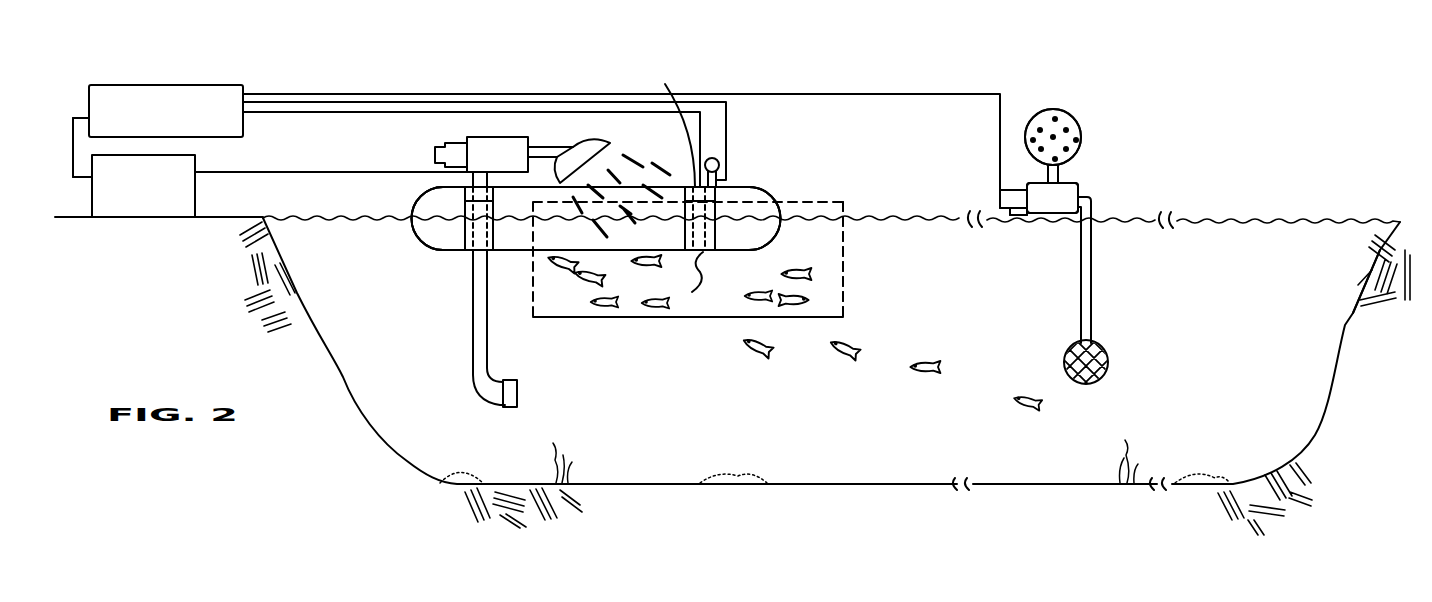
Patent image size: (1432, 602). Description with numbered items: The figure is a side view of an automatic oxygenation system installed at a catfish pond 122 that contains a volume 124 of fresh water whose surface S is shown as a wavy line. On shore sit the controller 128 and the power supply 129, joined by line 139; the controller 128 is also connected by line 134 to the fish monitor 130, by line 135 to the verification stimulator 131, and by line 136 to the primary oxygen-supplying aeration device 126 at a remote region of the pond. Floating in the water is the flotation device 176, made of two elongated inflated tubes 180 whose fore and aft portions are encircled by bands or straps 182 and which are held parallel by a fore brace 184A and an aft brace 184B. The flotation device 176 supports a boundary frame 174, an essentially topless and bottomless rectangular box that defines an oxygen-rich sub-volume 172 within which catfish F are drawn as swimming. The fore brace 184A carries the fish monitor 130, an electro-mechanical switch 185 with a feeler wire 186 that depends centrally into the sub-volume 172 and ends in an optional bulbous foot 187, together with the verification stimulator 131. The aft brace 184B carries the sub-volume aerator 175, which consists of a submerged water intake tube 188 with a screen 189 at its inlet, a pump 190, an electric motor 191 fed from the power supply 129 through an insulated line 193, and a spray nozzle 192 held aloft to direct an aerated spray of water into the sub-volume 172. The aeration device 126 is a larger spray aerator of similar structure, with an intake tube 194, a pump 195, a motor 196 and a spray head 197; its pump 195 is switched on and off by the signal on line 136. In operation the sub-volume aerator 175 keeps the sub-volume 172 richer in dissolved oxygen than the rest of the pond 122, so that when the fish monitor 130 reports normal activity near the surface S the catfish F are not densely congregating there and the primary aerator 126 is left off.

The catfish pond 122 is at (1352, 321).
The volume of fresh water 124 is at (930, 417).
The primary oxygen-supplying aeration device 126 is at (1107, 133).
The controller 128 is at (110, 87).
The power supply 129 is at (100, 202).
The fish monitor 130 is at (772, 170).
The verification stimulator 131 is at (718, 161).
The line 134 is at (699, 186).
The line 135 is at (727, 122).
The line 136 is at (863, 94).
The line 139 is at (72, 147).
The sub-volume 172 is at (658, 296).
The boundary frame 174 is at (846, 263).
The sub-volume aerator 175 is at (571, 138).
The flotation device 176 is at (408, 202).
The elongated inflated tubes 180 is at (770, 192).
The bands or straps 182 is at (470, 246).
The fore brace 184A is at (677, 190).
The aft brace 184B is at (465, 197).
The electro-mechanical switch 185 is at (695, 187).
The feeler wire or lever 186 is at (715, 237).
The bulbous foot 187 is at (695, 284).
The water intake tube 188 is at (473, 353).
The screen 189 is at (518, 390).
The pump 190 is at (510, 138).
The electric motor 191 is at (452, 142).
The spray nozzle 192 is at (598, 145).
The insulated line 193 is at (293, 172).
The intake tube 194 is at (1092, 297).
The pump 195 is at (1078, 187).
The motor 196 is at (1008, 220).
The spray nozzle or spray head 197 is at (1070, 113).
The catfish F is at (795, 270).
The surface S is at (1230, 222).